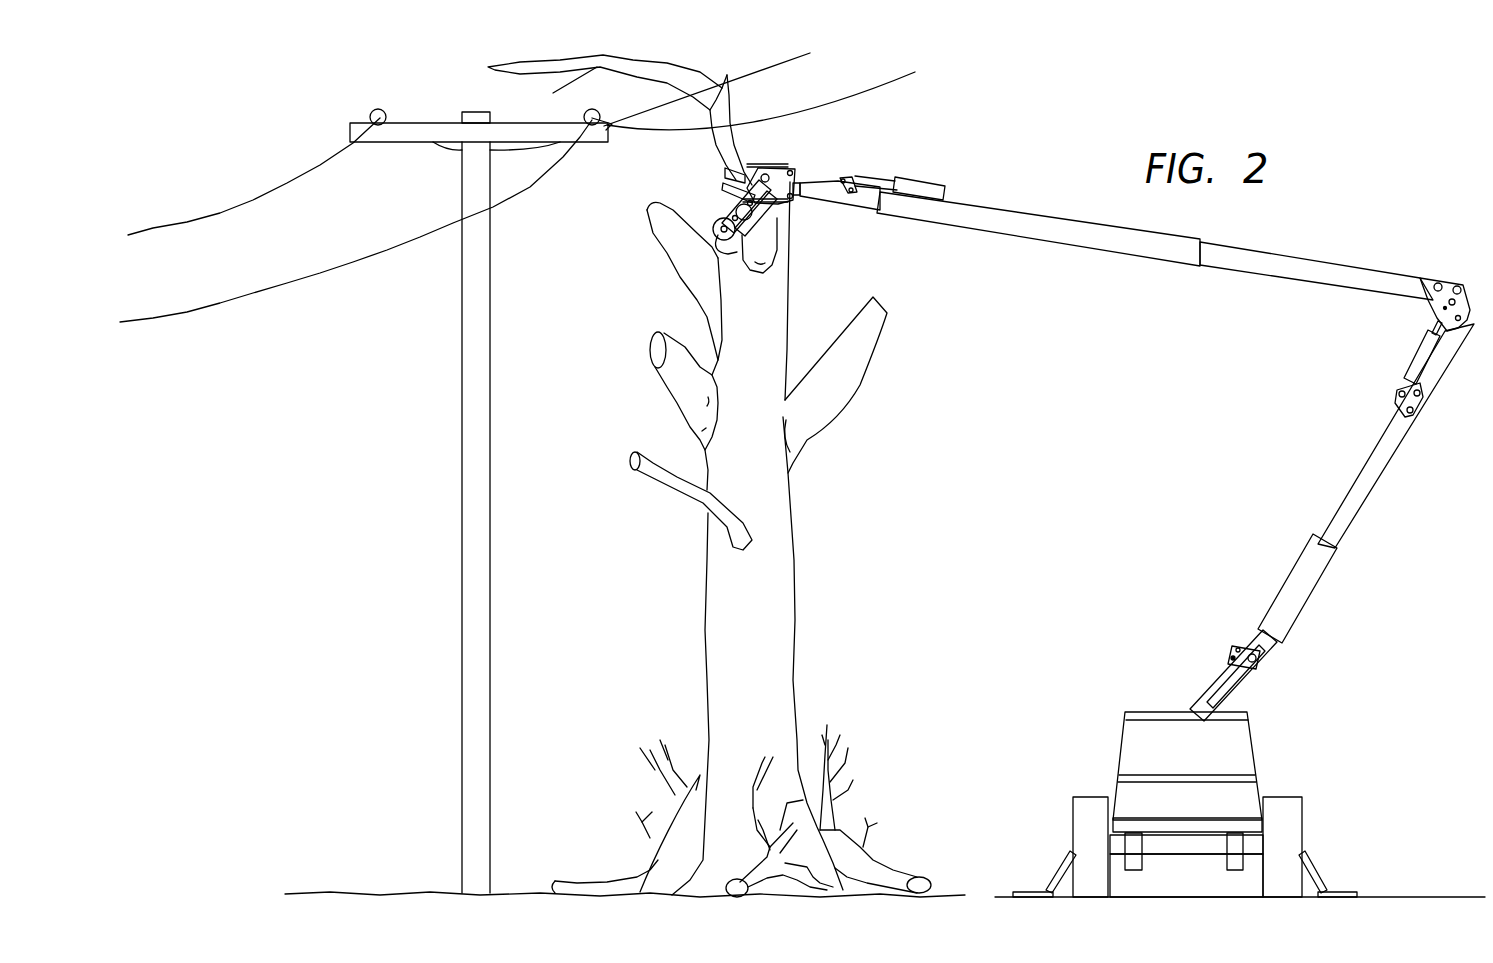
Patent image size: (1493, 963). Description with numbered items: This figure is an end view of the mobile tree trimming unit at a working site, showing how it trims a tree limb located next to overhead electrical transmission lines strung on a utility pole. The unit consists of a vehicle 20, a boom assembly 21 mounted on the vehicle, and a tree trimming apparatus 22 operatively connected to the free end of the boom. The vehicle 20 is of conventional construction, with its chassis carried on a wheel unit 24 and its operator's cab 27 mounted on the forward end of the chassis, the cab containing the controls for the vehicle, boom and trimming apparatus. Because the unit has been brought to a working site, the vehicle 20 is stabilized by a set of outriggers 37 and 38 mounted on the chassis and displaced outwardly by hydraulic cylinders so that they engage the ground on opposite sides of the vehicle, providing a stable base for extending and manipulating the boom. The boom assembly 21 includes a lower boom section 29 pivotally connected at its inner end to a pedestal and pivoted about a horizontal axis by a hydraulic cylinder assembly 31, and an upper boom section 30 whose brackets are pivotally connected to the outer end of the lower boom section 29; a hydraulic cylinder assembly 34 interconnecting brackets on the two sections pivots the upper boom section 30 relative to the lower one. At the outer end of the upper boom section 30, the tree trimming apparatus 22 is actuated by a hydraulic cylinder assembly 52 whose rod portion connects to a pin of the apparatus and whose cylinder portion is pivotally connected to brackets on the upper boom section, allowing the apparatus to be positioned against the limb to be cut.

The vehicle 20 is at (1188, 801).
The boom assembly 21 is at (1362, 521).
The tree trimming apparatus 22 is at (818, 178).
The wheel unit 24 is at (1305, 820).
The operator's cab 27 is at (1125, 752).
The lower boom section 29 is at (1305, 590).
The upper boom section 30 is at (1143, 259).
The hydraulic cylinder assembly 31 is at (1213, 680).
The hydraulic cylinder assembly 34 is at (1415, 352).
The outrigger 37 is at (1058, 862).
The outrigger 38 is at (1318, 868).
The hydraulic cylinder assembly 52 is at (925, 192).